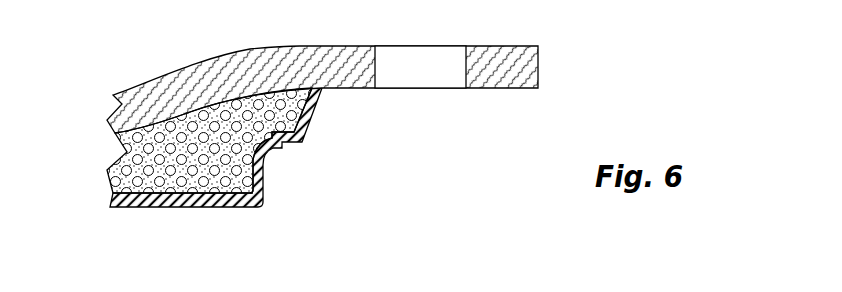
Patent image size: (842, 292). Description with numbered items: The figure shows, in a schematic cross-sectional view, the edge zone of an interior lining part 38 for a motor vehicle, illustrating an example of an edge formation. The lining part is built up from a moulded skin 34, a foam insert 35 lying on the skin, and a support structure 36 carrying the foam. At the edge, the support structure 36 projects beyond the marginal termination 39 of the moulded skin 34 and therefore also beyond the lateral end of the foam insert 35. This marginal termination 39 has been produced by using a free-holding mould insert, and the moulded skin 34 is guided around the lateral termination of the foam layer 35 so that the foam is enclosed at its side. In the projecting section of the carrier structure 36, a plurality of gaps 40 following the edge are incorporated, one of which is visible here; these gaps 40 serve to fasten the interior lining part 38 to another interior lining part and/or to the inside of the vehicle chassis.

The moulded skin 34 is at (180, 207).
The foam insert 35 is at (211, 164).
The support structure 36 is at (177, 70).
The interior lining part 38 is at (398, 197).
The marginal termination 39 is at (292, 190).
The gap 40 is at (415, 75).